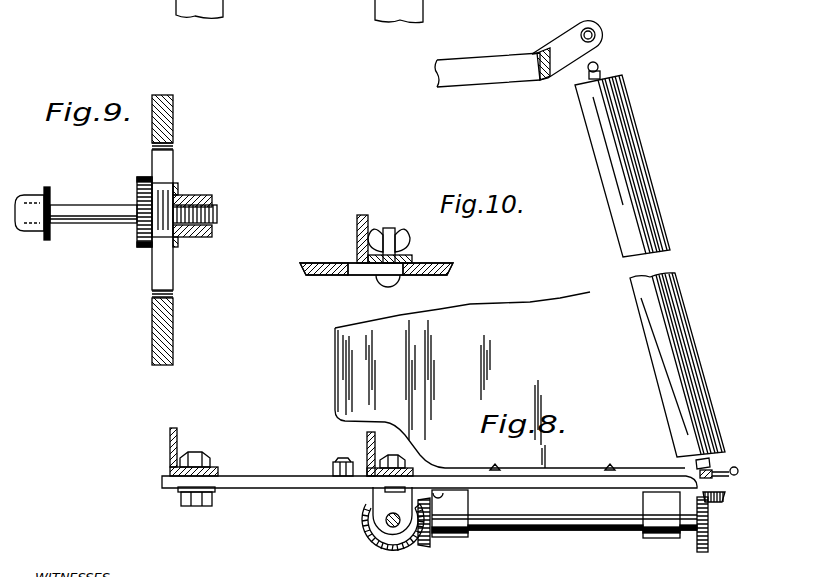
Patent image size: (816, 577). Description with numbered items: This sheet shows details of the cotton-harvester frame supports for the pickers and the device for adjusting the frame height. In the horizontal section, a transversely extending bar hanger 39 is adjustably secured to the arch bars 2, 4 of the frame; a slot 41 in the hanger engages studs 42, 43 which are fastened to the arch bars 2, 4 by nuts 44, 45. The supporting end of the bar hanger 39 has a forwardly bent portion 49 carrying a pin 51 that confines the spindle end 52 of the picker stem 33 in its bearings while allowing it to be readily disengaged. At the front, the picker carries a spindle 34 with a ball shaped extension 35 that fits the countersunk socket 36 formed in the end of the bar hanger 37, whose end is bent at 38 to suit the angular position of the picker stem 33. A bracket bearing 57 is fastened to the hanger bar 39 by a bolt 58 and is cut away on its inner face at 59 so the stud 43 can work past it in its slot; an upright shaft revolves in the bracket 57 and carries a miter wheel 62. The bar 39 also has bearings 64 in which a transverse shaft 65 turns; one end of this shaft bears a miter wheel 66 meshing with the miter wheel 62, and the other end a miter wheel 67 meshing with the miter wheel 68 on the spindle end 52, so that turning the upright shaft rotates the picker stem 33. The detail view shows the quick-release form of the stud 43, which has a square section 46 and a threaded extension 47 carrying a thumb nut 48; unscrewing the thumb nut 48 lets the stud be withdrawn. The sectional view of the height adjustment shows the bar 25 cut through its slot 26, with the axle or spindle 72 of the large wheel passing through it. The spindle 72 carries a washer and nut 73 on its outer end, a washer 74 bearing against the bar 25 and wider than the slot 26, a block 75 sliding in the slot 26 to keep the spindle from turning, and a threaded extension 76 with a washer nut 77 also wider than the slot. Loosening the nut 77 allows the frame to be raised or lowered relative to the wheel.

In FIG. 10, the arch bar 2 is at (357, 222).
In FIG. 8, the arch bar 2 is at (376, 445).
In FIG. 8, the arch bar 4 is at (178, 443).
In FIG. 9, the bar 25 is at (175, 116).
In FIG. 9, the slot 26 is at (175, 267).
In FIG. 8, the picker stem 33 is at (640, 147).
In FIG. 8, the spindle 34 is at (603, 73).
In FIG. 8, the ball shaped extension 35 is at (598, 65).
In FIG. 8, the countersunk socket 36 is at (593, 30).
In FIG. 8, the bar hanger 37 is at (492, 78).
In FIG. 8, the bent end 38 is at (563, 46).
In FIG. 10, the bar hanger 39 is at (458, 258).
In FIG. 8, the bar hanger 39 is at (272, 488).
In FIG. 10, the slot 41 is at (370, 268).
In FIG. 8, the stud 42 is at (208, 505).
In FIG. 10, the stud 43 is at (388, 288).
In FIG. 8, the stud 43 is at (408, 487).
In FIG. 8, the nut 44 is at (208, 457).
In FIG. 8, the nut 45 is at (405, 462).
In FIG. 10, the square section 46 is at (405, 258).
In FIG. 10, the threaded extension 47 is at (389, 232).
In FIG. 10, the thumb nut 48 is at (402, 248).
In FIG. 8, the forwardly bent portion 49 is at (697, 463).
In FIG. 8, the pin 51 is at (738, 474).
In FIG. 8, the spindle end 52 is at (714, 469).
In FIG. 8, the bracket bearing 57 is at (383, 508).
In FIG. 8, the bolt 58 is at (340, 462).
In FIG. 8, the cut-away 59 is at (372, 492).
In FIG. 8, the miter wheel 62 is at (396, 552).
In FIG. 8, the bearing 64 is at (455, 537).
In FIG. 8, the transverse shaft 65 is at (555, 531).
In FIG. 8, the miter wheel 66 is at (426, 540).
In FIG. 8, the miter wheel 67 is at (706, 548).
In FIG. 8, the miter wheel 68 is at (723, 498).
In FIG. 9, the axle or spindle 72 is at (88, 226).
In FIG. 9, the washer and nut 73 is at (35, 232).
In FIG. 9, the washer 74 is at (143, 249).
In FIG. 9, the block 75 is at (160, 207).
In FIG. 9, the threaded extension 76 is at (215, 212).
In FIG. 9, the washer nut 77 is at (212, 232).